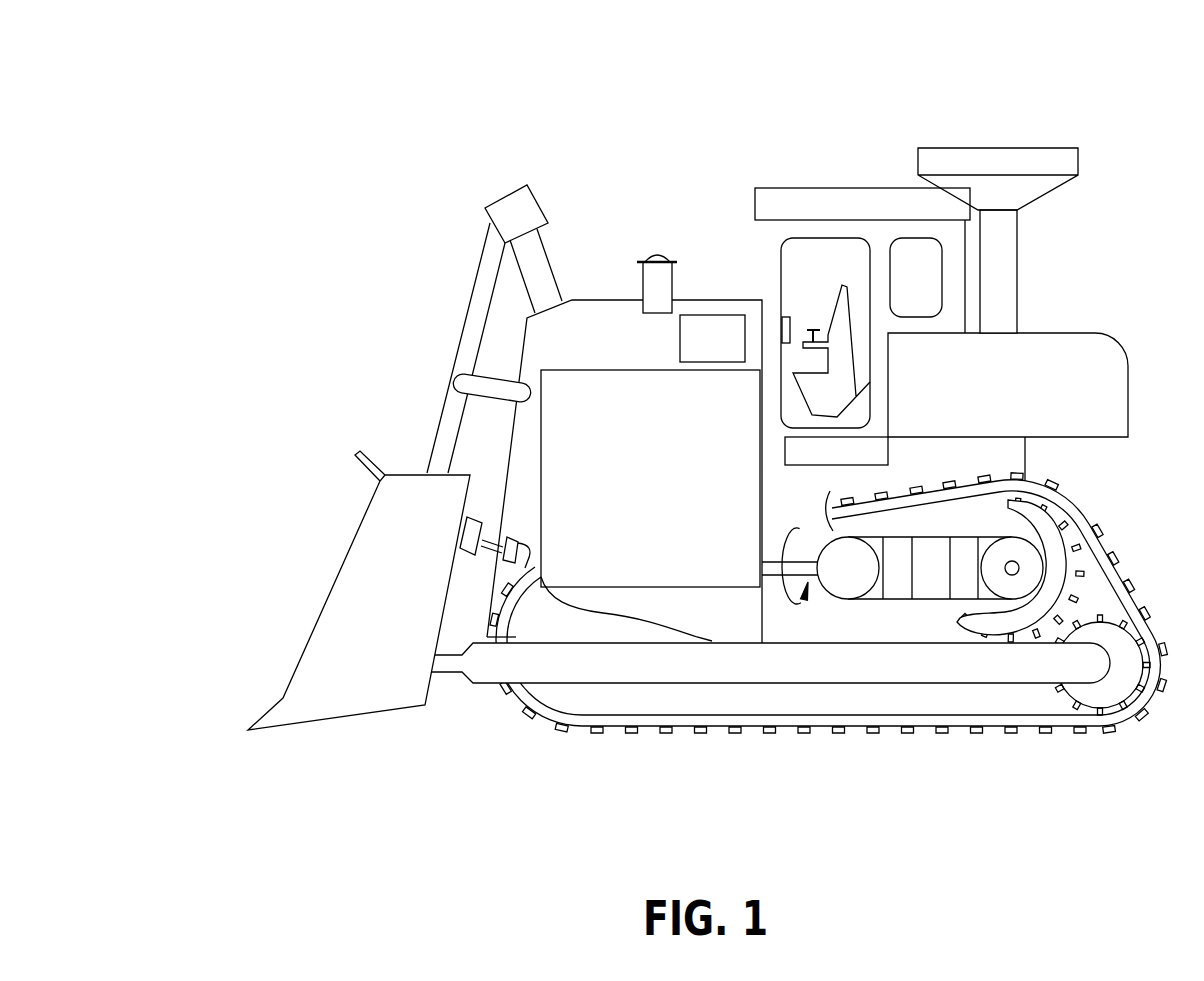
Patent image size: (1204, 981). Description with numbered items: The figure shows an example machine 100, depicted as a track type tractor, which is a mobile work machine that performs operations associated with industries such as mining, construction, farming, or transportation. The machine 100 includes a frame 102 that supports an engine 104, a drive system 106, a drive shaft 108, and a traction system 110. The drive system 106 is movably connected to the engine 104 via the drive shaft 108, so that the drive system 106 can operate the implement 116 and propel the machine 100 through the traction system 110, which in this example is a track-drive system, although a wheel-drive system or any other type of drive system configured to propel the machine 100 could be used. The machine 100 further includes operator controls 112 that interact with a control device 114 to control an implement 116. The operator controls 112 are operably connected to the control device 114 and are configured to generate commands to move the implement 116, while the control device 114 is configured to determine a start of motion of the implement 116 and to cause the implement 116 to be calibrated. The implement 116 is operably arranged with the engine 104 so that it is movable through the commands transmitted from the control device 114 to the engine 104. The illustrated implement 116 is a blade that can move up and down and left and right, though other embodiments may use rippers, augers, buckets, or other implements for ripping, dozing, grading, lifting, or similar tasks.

The machine 100 is at (201, 42).
The frame 102 is at (646, 359).
The engine 104 is at (670, 484).
The drive system 106 is at (917, 607).
The drive shaft 108 is at (763, 577).
The traction system 110 is at (1121, 572).
The operator controls 112 is at (779, 318).
The control device 114 is at (732, 352).
The implement 116 is at (357, 525).